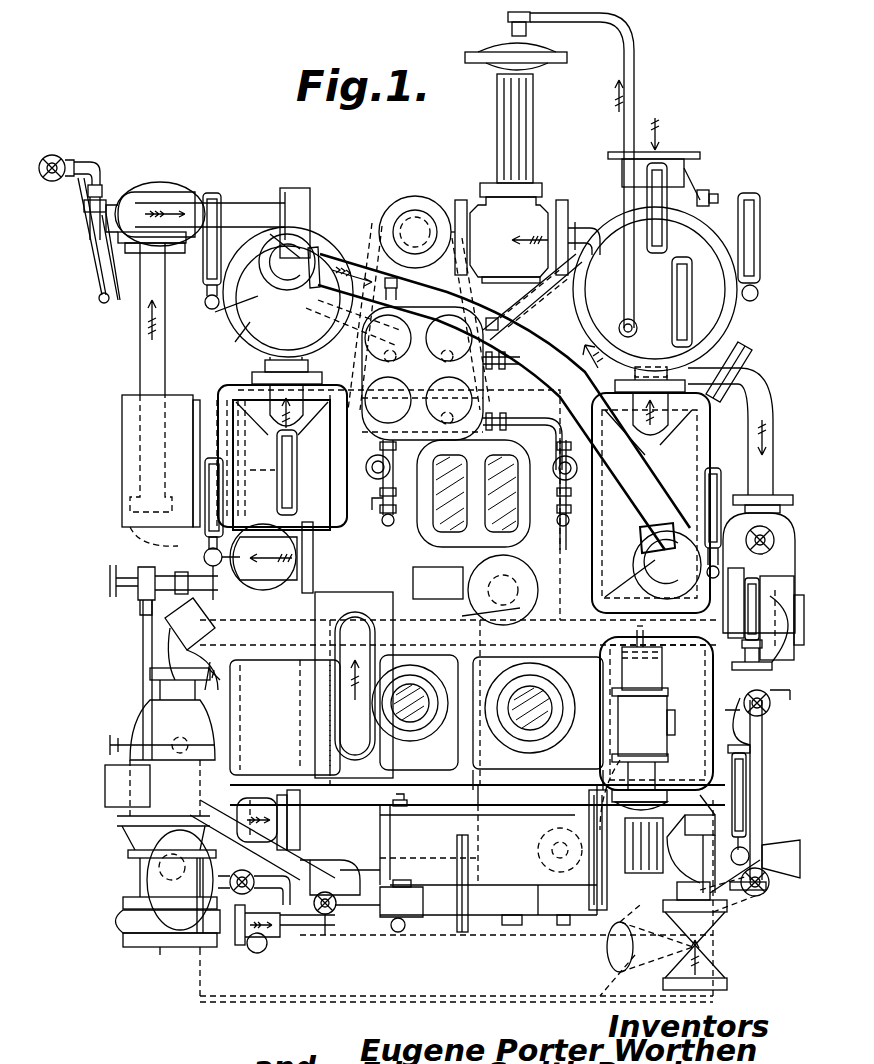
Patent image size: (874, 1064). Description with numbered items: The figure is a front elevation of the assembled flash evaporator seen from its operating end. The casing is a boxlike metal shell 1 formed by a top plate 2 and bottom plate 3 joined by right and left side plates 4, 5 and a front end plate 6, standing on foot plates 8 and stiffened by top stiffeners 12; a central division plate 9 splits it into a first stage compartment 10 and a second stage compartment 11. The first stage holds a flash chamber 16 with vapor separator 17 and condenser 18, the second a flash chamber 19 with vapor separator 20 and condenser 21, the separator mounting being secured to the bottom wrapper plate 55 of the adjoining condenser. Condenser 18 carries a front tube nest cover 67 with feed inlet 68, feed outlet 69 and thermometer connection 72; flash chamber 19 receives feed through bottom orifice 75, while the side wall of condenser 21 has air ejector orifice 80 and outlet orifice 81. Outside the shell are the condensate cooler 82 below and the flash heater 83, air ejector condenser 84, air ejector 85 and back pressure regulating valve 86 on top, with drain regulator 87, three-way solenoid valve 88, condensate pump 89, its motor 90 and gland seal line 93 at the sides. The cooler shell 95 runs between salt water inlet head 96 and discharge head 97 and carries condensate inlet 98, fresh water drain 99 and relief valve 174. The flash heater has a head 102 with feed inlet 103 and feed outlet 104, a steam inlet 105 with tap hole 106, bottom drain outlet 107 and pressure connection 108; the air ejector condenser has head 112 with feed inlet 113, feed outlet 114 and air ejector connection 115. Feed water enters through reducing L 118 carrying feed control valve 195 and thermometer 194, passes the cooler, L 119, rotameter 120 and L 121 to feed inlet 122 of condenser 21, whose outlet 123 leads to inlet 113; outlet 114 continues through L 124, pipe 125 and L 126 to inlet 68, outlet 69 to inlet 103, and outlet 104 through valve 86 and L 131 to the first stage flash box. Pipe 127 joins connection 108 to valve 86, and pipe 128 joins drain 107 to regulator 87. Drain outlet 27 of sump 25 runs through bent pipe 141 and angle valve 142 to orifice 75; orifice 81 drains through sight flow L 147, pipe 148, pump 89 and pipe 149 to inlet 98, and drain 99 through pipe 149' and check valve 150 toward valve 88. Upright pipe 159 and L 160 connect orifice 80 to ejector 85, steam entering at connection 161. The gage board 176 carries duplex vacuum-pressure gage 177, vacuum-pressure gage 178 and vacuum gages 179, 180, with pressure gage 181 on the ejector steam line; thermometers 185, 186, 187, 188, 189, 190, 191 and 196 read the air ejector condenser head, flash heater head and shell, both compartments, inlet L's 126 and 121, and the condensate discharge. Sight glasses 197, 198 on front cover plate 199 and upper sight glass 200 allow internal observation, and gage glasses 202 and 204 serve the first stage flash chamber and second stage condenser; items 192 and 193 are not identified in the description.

The shell 1 is at (405, 632).
The top plate 2 is at (292, 450).
The bottom plate 3 is at (460, 792).
The side plate 4 is at (696, 470).
The side plate 5 is at (235, 440).
The end plate 6 is at (455, 605).
The foot plates 8 is at (238, 822).
The division plate 9 is at (419, 712).
The first stage compartment 10 is at (545, 622).
The second stage compartment 11 is at (491, 618).
The stiffeners 12 is at (740, 600).
The flash chamber 16 is at (600, 714).
The vapor separator 17 is at (524, 555).
The condenser 18 is at (688, 512).
The flash chamber 19 is at (308, 670).
The vapor separator 20 is at (332, 470).
The condenser 21 is at (246, 432).
The well or sump 25 is at (560, 887).
The drain outlet 27 is at (490, 842).
The bottom wrapper plate 55 is at (310, 668).
The front tube nest cover 67 is at (686, 450).
The feed inlet 68 is at (655, 553).
The outlet 69 is at (652, 452).
The thermometer connection 72 is at (745, 590).
The bottom orifice 75 is at (310, 752).
The air ejector orifice 80 is at (204, 556).
The outlet orifice 81 is at (160, 642).
The condensate cooler 82 is at (545, 920).
The flash heater 83 is at (706, 298).
The air ejector condenser 84 is at (240, 340).
The air ejector 85 is at (250, 203).
The back pressure regulating valve 86 is at (535, 206).
The drain regulator 87 is at (790, 525).
The three-way solenoid valve 88 is at (782, 622).
The condensate pump 89 is at (162, 935).
The motor 90 is at (130, 760).
The gland seal line 93 is at (232, 945).
The shell 95 is at (497, 917).
The salt water inlet head 96 is at (612, 940).
The salt water discharge head 97 is at (345, 877).
The condensate inlet 98 is at (405, 930).
The fresh water drain 99 is at (528, 859).
The head 102 is at (706, 268).
The feed inlet 103 is at (650, 370).
The feed outlet 104 is at (588, 226).
The steam inlet 105 is at (672, 154).
The tap hole 106 is at (714, 196).
The bottom drain outlet 107 is at (738, 362).
The pressure connection 108 is at (634, 320).
The head 112 is at (226, 308).
The feed inlet 113 is at (290, 312).
The feed outlet 114 is at (300, 228).
The air ejector connection 115 is at (310, 205).
The reducing L 118 is at (740, 897).
The L 119 is at (262, 795).
The rotameter 120 is at (330, 690).
The L 121 is at (265, 532).
The feed inlet 122 is at (196, 632).
The outlet 123 is at (300, 384).
The L 124 is at (308, 246).
The pipe 125 is at (574, 402).
The L 126 is at (645, 632).
The pipe 127 is at (636, 96).
The pipe 128 is at (770, 400).
The L 131 is at (414, 214).
The bent pipe 141 is at (430, 851).
The angle valve 142 is at (398, 837).
The sight flow L fitting 147 is at (165, 626).
The pipe 148 is at (120, 820).
The pipe 149 is at (456, 901).
The pipe 149' is at (530, 844).
The check valve 150 is at (600, 937).
The upright pipe 159 is at (140, 365).
The L 160 is at (150, 538).
The connection 161 is at (40, 162).
The relief valve 174 is at (620, 742).
The gage board 176 is at (355, 309).
The duplex vacuum-pressure gage 177 is at (517, 324).
The vacuum-pressure gage 178 is at (401, 316).
The vacuum gage 179 is at (472, 400).
The vacuum gage 180 is at (422, 373).
The pressure gage 181 is at (100, 285).
The thermometer 185 is at (207, 193).
The thermometer 186 is at (668, 198).
The thermometer 187 is at (750, 256).
The thermometer 188 is at (545, 605).
The thermometer 189 is at (470, 647).
The thermometer 190 is at (705, 488).
The thermometer 191 is at (222, 486).
The valve 192 is at (380, 440).
The chamber 193 is at (246, 418).
The thermometer 194 is at (746, 795).
The feed control valve 195 is at (710, 950).
The thermometer 196 is at (740, 642).
The sight glass 197 is at (550, 694).
The sight glass 198 is at (420, 708).
The front cover plate 199 is at (565, 760).
The sight glass 200 is at (452, 525).
The gage glass 202 is at (762, 818).
The gage glass 204 is at (143, 674).